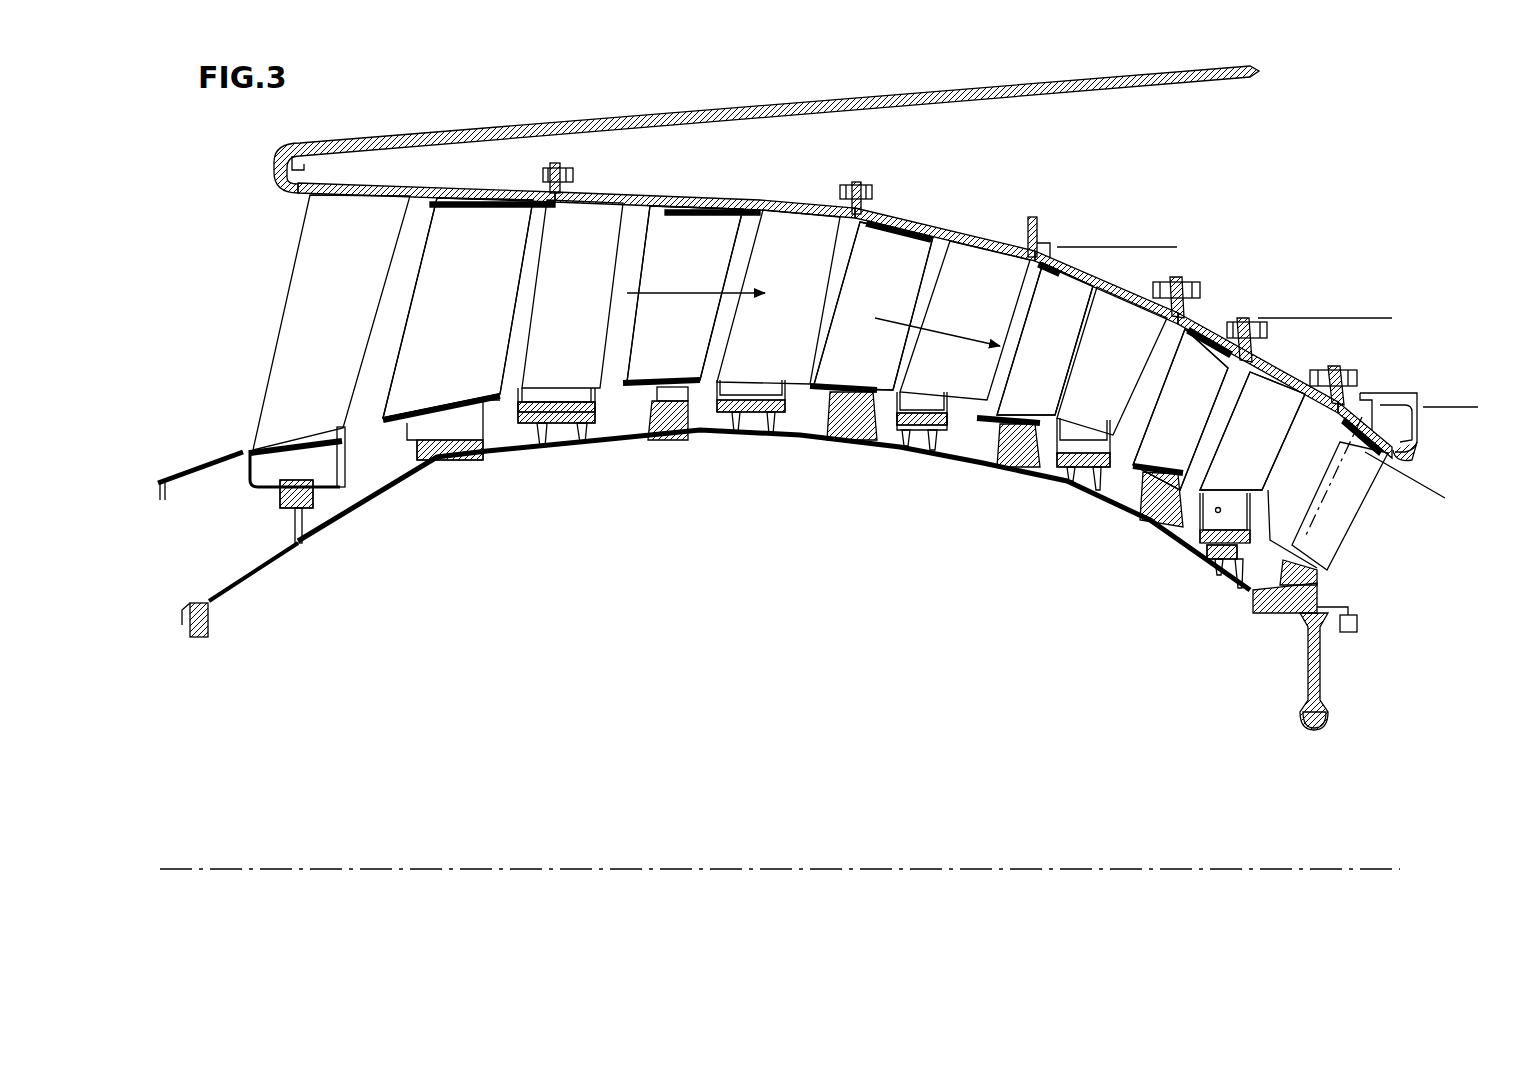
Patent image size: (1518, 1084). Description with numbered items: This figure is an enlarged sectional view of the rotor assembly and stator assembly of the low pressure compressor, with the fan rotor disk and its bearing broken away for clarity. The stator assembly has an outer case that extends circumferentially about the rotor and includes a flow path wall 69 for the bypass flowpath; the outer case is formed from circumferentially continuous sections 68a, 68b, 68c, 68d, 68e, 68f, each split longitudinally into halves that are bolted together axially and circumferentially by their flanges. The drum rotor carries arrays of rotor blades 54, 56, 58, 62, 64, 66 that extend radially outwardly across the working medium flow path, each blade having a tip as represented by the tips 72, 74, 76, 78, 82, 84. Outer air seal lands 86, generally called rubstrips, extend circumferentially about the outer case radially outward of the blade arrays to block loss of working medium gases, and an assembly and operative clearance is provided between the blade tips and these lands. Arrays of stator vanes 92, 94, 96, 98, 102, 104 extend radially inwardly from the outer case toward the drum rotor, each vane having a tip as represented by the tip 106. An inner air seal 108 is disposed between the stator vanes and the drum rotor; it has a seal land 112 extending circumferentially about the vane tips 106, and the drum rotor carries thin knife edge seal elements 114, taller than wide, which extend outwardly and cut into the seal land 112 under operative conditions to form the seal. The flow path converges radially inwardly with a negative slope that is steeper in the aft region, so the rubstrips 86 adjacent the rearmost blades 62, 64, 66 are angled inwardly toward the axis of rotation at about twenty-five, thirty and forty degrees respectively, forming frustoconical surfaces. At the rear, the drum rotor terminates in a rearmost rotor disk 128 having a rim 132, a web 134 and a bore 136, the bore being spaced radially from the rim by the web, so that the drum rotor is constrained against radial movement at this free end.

The flow path wall 69 is at (1183, 80).
The outer case section 68a is at (343, 185).
The outer case section 68b is at (598, 195).
The outer case section 68c is at (938, 228).
The outer case section 68d is at (1127, 287).
The outer case section 68e is at (1294, 372).
The outer case section 68f is at (1362, 392).
The outer air seal land 86 is at (467, 187).
The stator vane 92 is at (331, 381).
The rotor blade tip 72 is at (496, 233).
The rotor blade 54 is at (480, 323).
The stator vane 94 is at (586, 363).
The rotor blade tip 74 is at (723, 238).
The rotor blade 56 is at (696, 323).
The stator vane 96 is at (775, 361).
The rotor blade tip 76 is at (893, 256).
The rotor blade 58 is at (871, 343).
The stator vane 98 is at (938, 381).
The rotor blade tip 78 is at (1065, 304).
The rotor blade 62 is at (1041, 363).
The stator vane 102 is at (1072, 416).
The rotor blade tip 82 is at (1213, 371).
The rotor blade 64 is at (1193, 420).
The stator vane 104 is at (1235, 446).
The stator vane tip 106 is at (1214, 495).
The rotor blade 66 is at (1335, 518).
The rotor blade tip 84 is at (1370, 453).
The inner air seal 108 is at (347, 487).
The seal land 112 is at (293, 513).
The knife edge seal element 114 is at (533, 430).
The rearmost rotor disk 128 is at (1352, 672).
The rim 132 is at (1317, 595).
The web 134 is at (1323, 675).
The bore 136 is at (1300, 765).